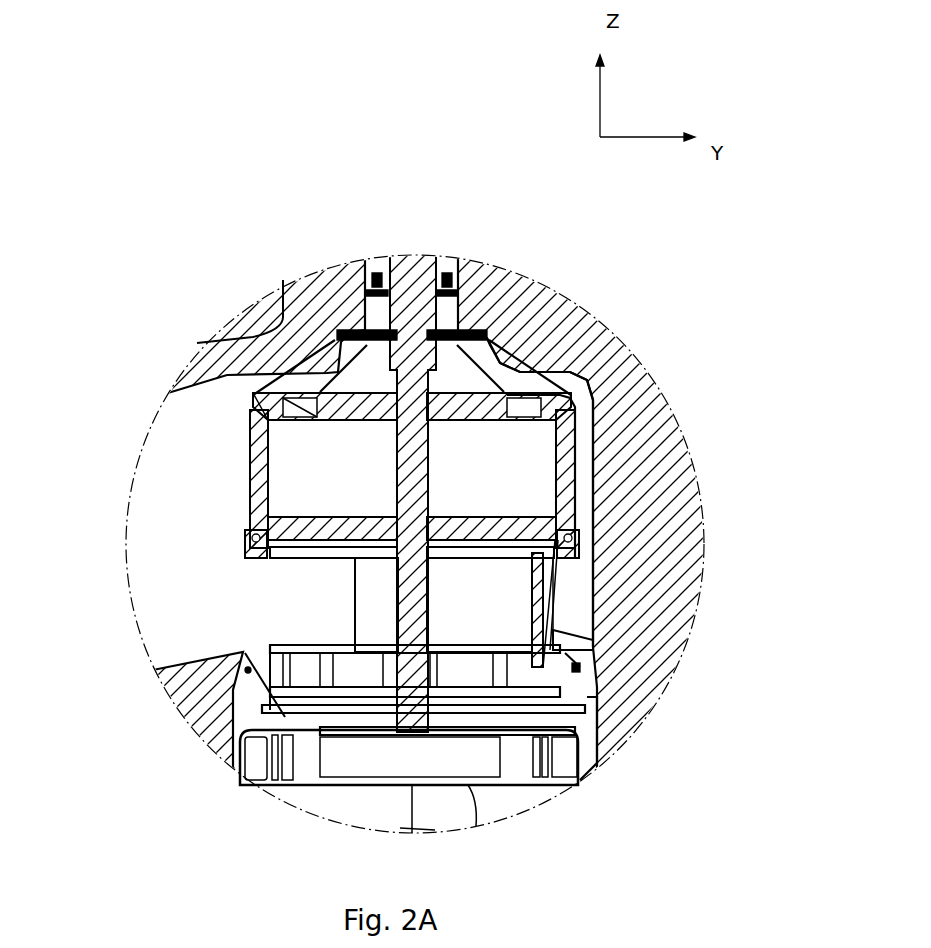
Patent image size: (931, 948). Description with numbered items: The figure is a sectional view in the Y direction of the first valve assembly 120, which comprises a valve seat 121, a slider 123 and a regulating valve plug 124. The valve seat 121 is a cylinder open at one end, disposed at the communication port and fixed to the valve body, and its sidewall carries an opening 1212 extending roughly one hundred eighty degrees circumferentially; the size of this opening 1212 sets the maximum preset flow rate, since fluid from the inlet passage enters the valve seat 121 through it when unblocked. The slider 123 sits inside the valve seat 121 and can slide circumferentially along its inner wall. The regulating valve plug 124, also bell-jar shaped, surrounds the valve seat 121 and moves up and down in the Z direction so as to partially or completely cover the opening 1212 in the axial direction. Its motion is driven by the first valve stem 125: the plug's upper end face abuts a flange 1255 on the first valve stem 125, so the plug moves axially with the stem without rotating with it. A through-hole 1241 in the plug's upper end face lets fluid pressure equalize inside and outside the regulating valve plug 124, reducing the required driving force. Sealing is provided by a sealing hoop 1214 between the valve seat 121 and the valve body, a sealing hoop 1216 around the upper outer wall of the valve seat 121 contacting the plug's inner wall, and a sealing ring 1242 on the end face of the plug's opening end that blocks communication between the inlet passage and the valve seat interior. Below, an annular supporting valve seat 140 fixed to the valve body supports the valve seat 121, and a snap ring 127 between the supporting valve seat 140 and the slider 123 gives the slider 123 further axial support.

The first valve assembly 120 is at (650, 322).
The valve seat 121 is at (562, 634).
The opening 1212 is at (325, 606).
The sealing hoop 1214 is at (585, 670).
The sealing hoop 1216 is at (583, 528).
The slider 123 is at (546, 604).
The regulating valve plug 124 is at (560, 470).
The through-hole 1241 is at (287, 407).
The sealing ring 1242 is at (247, 548).
The first valve stem 125 is at (413, 262).
The flange 1255 is at (452, 345).
The snap ring 127 is at (257, 775).
The supporting valve seat 140 is at (586, 765).